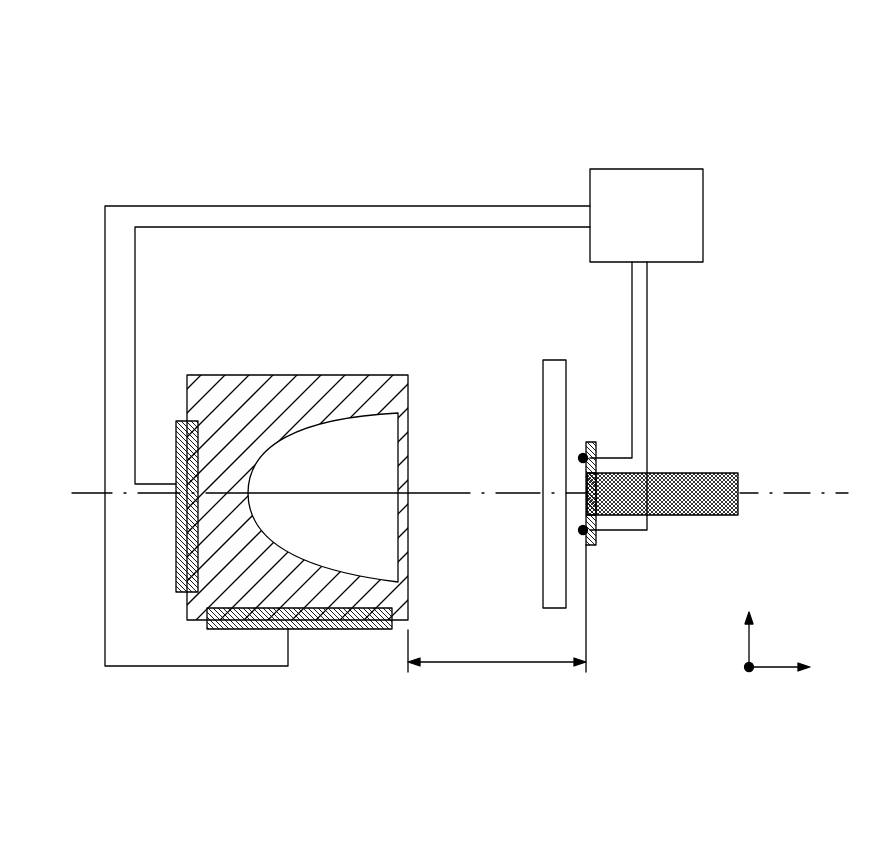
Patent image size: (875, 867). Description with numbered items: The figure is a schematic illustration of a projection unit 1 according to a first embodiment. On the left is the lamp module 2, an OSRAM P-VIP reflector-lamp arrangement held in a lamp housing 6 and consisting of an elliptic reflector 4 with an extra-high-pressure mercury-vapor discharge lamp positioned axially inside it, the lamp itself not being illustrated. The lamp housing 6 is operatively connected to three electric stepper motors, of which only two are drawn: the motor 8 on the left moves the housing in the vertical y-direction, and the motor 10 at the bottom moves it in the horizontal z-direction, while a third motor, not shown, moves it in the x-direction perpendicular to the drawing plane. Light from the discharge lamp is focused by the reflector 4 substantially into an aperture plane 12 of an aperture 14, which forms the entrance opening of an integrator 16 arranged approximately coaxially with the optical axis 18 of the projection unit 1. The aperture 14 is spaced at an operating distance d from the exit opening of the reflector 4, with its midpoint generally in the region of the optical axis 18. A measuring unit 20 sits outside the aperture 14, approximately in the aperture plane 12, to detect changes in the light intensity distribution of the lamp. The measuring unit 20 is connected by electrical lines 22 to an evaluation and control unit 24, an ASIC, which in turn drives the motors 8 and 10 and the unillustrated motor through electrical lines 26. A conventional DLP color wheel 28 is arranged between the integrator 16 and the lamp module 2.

The projection unit 1 is at (608, 86).
The lamp module 2 is at (336, 362).
The elliptic reflector 4 is at (337, 548).
The lamp housing 6 is at (230, 405).
The motor 8 is at (176, 555).
The motor 10 is at (380, 625).
The aperture plane 12 is at (584, 506).
The aperture 14 is at (572, 485).
The integrator 16 is at (692, 472).
The optical axis 18 is at (790, 492).
The measuring unit 20 is at (590, 434).
The electrical lines 22 is at (632, 305).
The evaluation and control unit 24 is at (661, 227).
The electrical lines 26 is at (381, 206).
The color wheel 28 is at (553, 372).